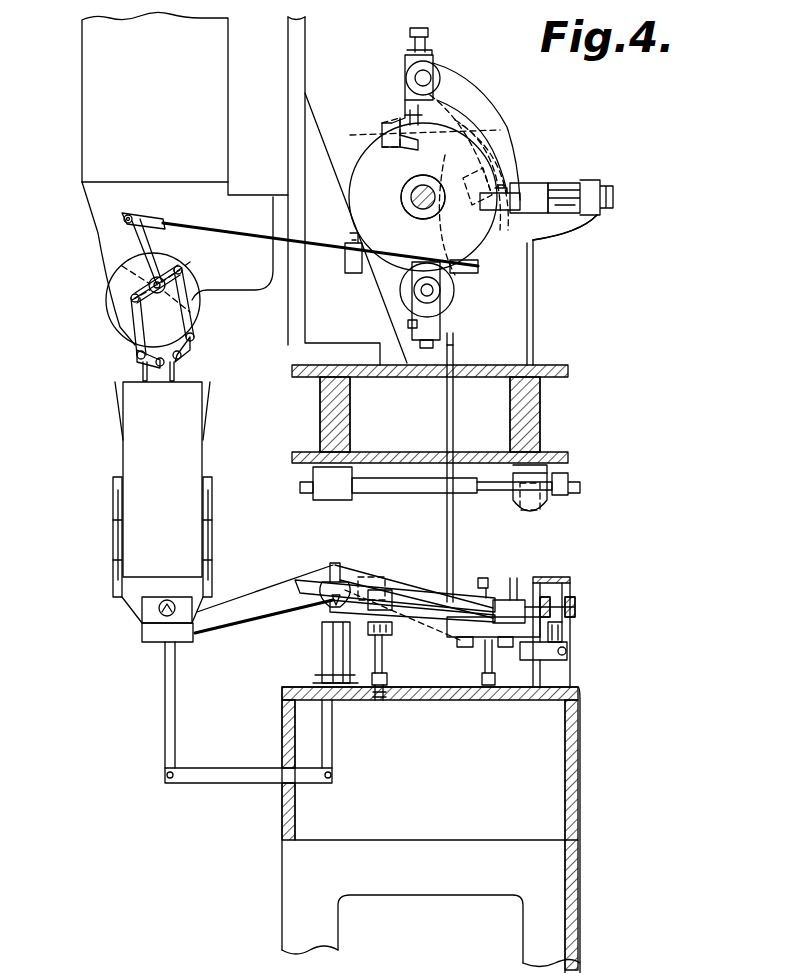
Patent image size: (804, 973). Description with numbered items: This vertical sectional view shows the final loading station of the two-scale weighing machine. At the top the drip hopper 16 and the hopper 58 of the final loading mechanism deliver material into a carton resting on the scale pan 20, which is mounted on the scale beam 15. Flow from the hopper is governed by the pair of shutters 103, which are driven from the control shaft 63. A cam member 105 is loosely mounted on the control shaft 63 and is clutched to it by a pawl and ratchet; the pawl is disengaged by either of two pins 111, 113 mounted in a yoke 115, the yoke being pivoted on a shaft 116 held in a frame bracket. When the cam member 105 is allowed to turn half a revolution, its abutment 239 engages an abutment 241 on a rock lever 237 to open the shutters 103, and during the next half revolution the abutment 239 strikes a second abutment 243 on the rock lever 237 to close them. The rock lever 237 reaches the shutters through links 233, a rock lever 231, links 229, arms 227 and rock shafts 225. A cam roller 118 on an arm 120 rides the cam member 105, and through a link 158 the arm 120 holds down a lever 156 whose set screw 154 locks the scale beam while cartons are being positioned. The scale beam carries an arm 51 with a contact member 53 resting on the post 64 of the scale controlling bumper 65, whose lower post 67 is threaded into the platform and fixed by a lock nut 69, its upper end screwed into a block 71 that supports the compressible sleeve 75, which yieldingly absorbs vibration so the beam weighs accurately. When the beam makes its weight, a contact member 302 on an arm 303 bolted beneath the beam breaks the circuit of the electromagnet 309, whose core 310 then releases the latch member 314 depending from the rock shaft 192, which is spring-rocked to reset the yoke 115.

The scale beam 15 is at (258, 590).
The drip hopper 16 is at (66, 122).
The scale pan 20 is at (130, 605).
The arm 51 is at (378, 585).
The contact member 53 is at (345, 570).
The hopper 58 is at (85, 232).
The control shaft 63 is at (423, 190).
The post 64 is at (398, 590).
The scale controlling bumper 65 is at (408, 565).
The post 67 is at (384, 658).
The lock nut 69 is at (390, 680).
The block 71 is at (392, 630).
The compressible sleeve 75 is at (345, 628).
The shutters 103 is at (130, 372).
The cam member 105 is at (380, 155).
The pin 111 is at (470, 80).
The pin 113 is at (395, 285).
The yoke 115 is at (520, 168).
The shaft 116 is at (575, 183).
The cam roller 118 is at (455, 300).
The arm 120 is at (410, 337).
The set screw 154 is at (488, 578).
The lever 156 is at (470, 600).
The link 158 is at (445, 436).
The rock shaft 192 is at (500, 478).
The rock shaft 225 is at (135, 356).
The arm 227 is at (140, 340).
The link 229 is at (130, 310).
The rock lever 231 is at (126, 262).
The link 233 is at (258, 240).
The rock lever 237 is at (405, 95).
The abutment 239 is at (403, 190).
The abutment 241 is at (389, 140).
The abutment 243 is at (463, 197).
The contact member 302 is at (566, 634).
The arm 303 is at (570, 658).
The electromagnet 309 is at (540, 520).
The core 310 is at (515, 507).
The latch member 314 is at (552, 498).